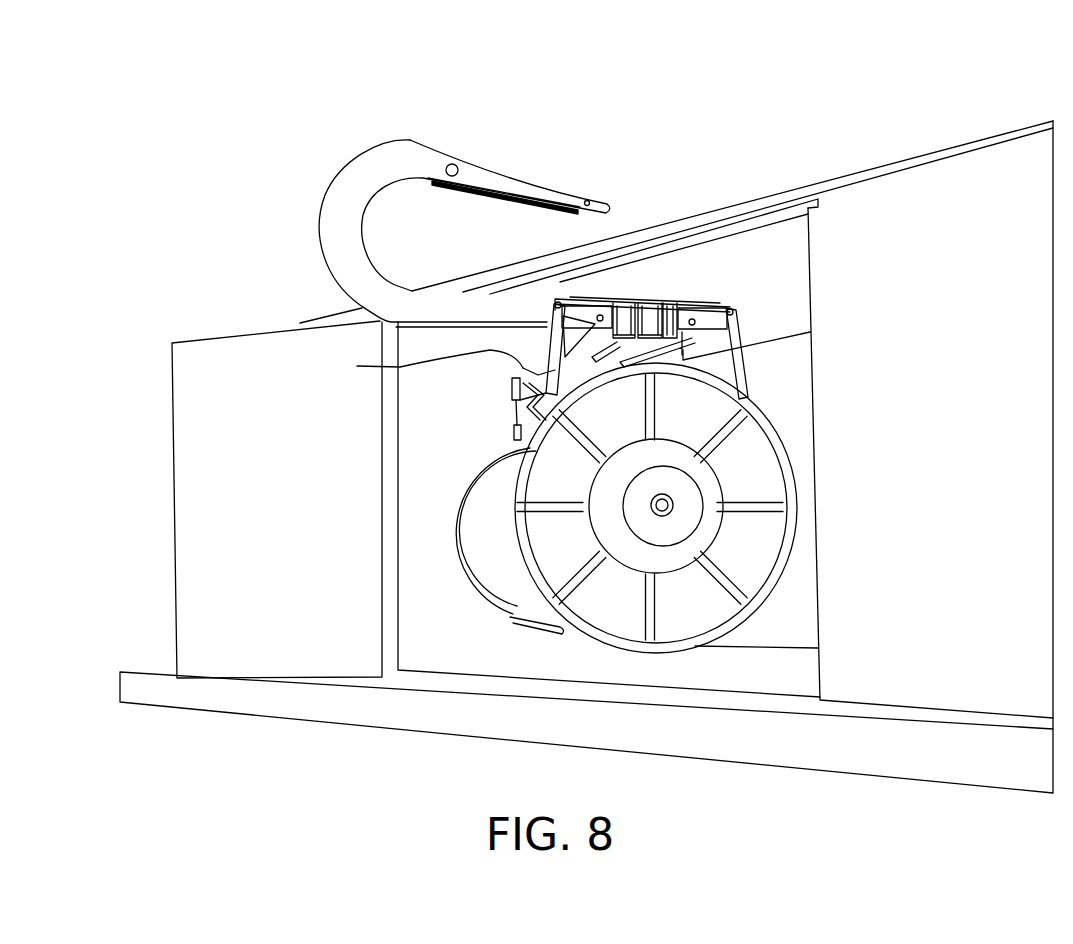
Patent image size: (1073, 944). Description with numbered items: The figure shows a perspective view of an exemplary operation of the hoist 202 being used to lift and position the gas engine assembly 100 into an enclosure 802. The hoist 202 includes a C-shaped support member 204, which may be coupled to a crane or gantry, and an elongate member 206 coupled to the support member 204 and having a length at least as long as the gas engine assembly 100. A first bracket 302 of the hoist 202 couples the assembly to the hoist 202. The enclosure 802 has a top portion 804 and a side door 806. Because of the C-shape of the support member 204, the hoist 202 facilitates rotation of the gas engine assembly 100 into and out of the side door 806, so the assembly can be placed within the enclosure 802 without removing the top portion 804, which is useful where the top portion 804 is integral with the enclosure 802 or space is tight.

The gas engine assembly 100 is at (508, 573).
The hoist 202 is at (525, 130).
The support member 204 is at (412, 144).
The elongate member 206 is at (357, 366).
The first bracket 302 is at (700, 298).
The enclosure 802 is at (930, 148).
The top portion 804 is at (724, 209).
The side door 806 is at (667, 252).